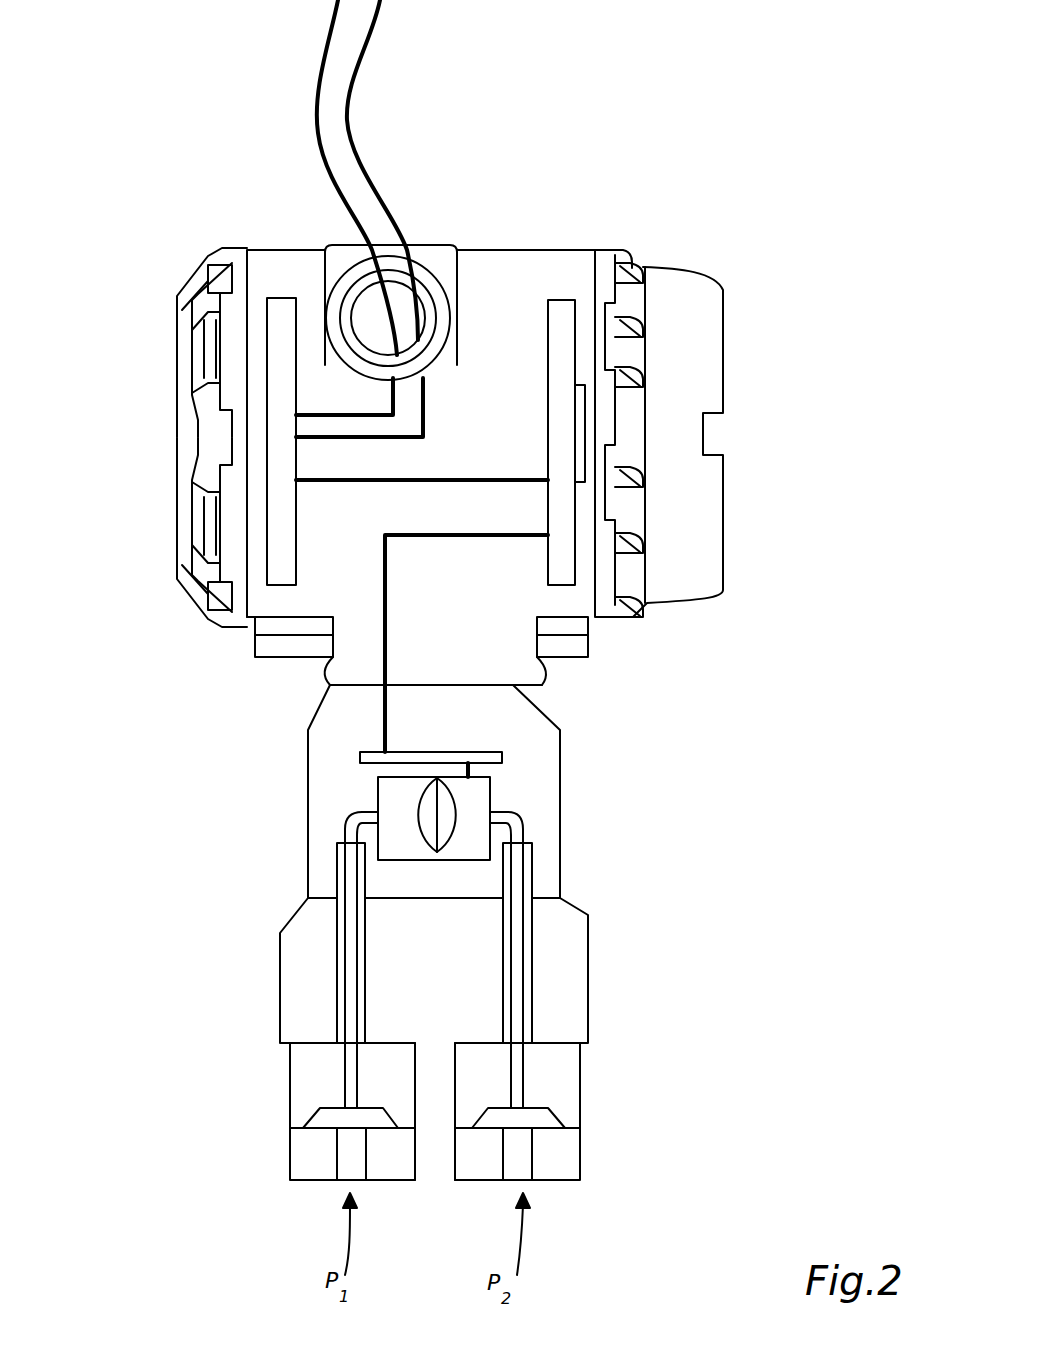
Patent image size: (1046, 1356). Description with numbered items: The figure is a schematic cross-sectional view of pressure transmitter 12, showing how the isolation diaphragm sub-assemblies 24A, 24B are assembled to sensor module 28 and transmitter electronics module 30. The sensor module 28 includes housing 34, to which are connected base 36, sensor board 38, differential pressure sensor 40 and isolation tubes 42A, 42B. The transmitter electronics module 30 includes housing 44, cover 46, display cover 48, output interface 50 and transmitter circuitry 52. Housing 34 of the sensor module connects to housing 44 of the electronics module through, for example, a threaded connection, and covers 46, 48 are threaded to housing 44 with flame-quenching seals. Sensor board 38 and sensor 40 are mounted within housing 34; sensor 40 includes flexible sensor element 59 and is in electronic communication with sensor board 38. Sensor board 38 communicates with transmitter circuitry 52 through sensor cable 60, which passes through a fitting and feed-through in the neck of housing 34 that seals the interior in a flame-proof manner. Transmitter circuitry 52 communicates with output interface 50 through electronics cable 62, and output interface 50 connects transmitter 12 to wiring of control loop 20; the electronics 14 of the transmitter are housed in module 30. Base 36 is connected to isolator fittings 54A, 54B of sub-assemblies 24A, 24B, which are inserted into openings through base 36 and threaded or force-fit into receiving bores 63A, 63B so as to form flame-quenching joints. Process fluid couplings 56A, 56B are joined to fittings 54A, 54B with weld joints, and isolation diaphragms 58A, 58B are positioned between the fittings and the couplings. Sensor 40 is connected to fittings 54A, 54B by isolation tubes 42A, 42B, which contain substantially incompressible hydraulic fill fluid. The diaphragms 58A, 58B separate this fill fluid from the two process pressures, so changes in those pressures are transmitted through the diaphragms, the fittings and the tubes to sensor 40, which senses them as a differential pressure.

The pressure transmitter 12 is at (192, 192).
The transmitter electronics 14 is at (582, 433).
The control loop 20 is at (397, 75).
The sub-assembly 24A is at (582, 1205).
The sub-assembly 24B is at (293, 1205).
The sensor module 28 is at (592, 810).
The transmitter electronics module 30 is at (555, 250).
The housing 34 is at (508, 740).
The base 36 is at (570, 997).
The sensor board 38 is at (360, 757).
The differential pressure sensor 40 is at (476, 797).
The isolation tube 42A is at (527, 817).
The isolation tube 42B is at (360, 813).
The housing 44 is at (487, 266).
The cover 46 is at (192, 473).
The display cover 48 is at (706, 580).
The output interface 50 is at (278, 304).
The transmitter circuitry 52 is at (560, 317).
The isolator fitting 54A is at (573, 1058).
The isolator fitting 54B is at (302, 1060).
The process fluid coupling 56A is at (577, 1160).
The process fluid coupling 56B is at (300, 1163).
The isolation diaphragm 58A is at (527, 1120).
The isolation diaphragm 58B is at (347, 1122).
The flexible sensor element 59 is at (427, 797).
The sensor cable 60 is at (383, 722).
The electronics cable 62 is at (417, 484).
The receiving bore 63A is at (548, 970).
The receiving bore 63B is at (337, 957).